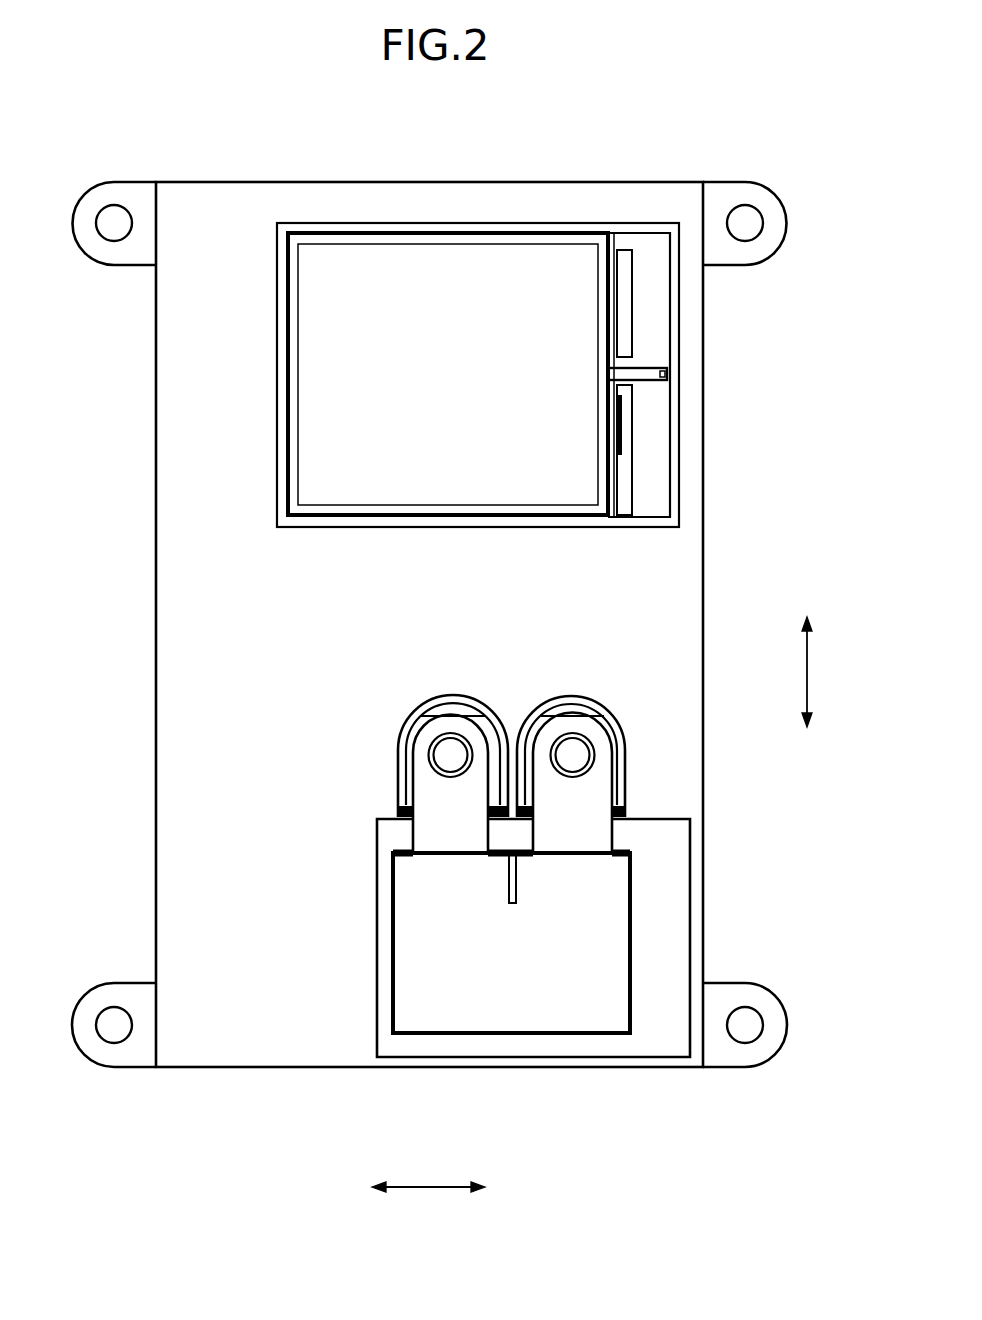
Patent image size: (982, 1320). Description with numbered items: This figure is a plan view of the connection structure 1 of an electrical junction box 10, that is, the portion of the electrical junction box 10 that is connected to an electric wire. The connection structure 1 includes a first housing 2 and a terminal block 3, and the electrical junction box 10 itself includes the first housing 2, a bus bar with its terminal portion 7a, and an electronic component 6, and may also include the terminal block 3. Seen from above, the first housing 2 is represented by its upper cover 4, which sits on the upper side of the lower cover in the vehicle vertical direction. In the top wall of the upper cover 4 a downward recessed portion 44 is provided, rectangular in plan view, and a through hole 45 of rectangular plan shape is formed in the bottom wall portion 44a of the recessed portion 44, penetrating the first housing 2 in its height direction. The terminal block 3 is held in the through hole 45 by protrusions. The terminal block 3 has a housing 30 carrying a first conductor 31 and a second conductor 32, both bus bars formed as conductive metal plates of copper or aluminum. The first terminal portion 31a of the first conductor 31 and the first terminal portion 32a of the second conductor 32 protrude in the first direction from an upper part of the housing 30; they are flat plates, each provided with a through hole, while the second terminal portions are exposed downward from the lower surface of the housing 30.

The electrical junction box 10 is at (228, 168).
The upper cover 4 is at (148, 632).
The electronic component 6 is at (444, 283).
The connector terminal 7a is at (625, 272).
The connection structure 1 is at (72, 790).
The first housing 2 is at (186, 811).
The terminal block 3 is at (417, 928).
The second conductor 32 is at (412, 753).
The first terminal portion 32a is at (433, 815).
The first conductor 31 is at (612, 760).
The first terminal portion 31a is at (625, 812).
The recessed portion 44 is at (660, 1022).
The bottom wall portion 44a is at (670, 942).
The housing 30 is at (537, 1005).
The through hole 45 is at (508, 860).